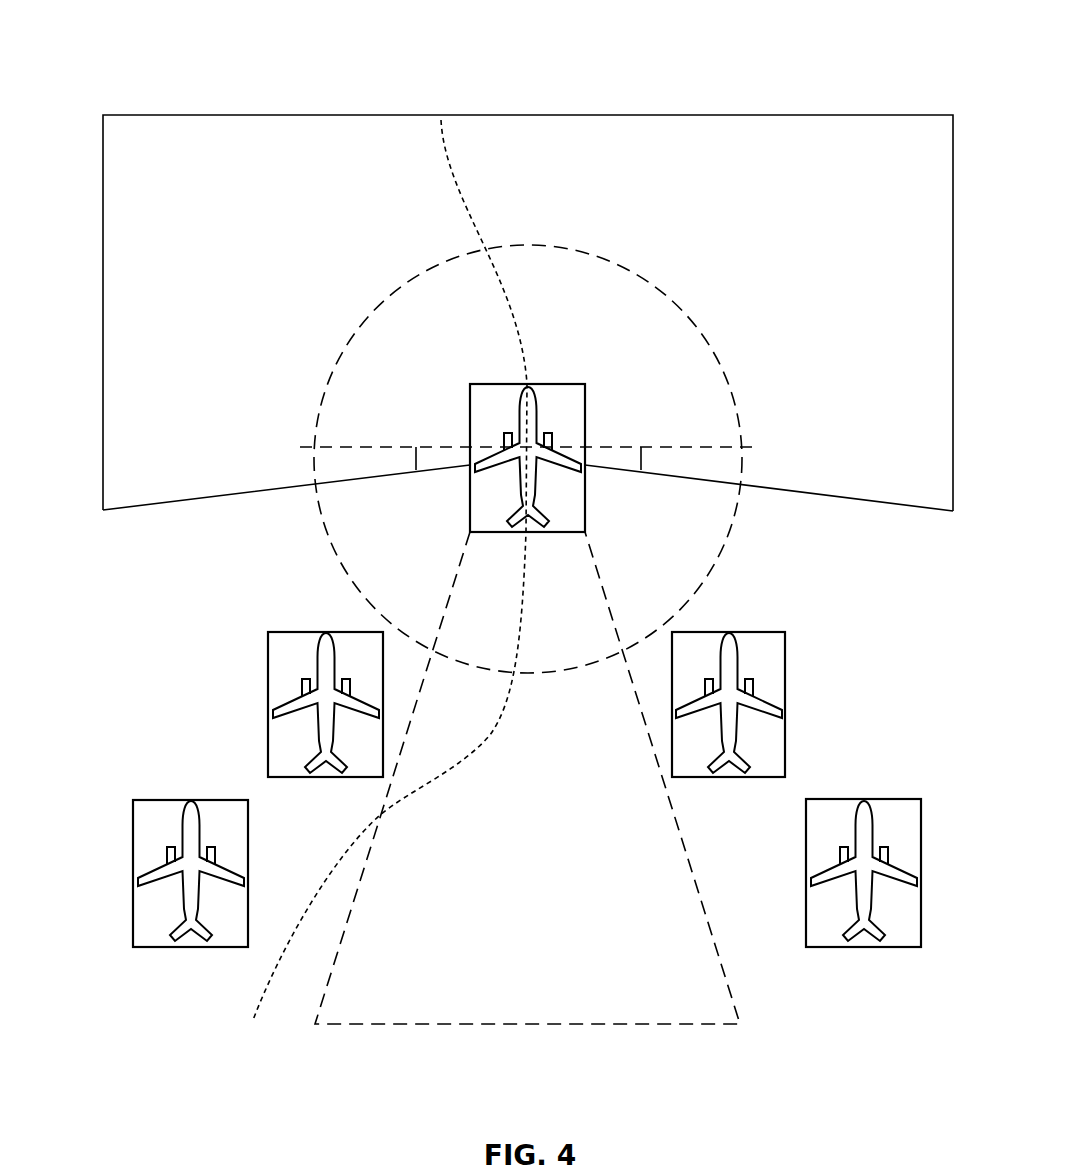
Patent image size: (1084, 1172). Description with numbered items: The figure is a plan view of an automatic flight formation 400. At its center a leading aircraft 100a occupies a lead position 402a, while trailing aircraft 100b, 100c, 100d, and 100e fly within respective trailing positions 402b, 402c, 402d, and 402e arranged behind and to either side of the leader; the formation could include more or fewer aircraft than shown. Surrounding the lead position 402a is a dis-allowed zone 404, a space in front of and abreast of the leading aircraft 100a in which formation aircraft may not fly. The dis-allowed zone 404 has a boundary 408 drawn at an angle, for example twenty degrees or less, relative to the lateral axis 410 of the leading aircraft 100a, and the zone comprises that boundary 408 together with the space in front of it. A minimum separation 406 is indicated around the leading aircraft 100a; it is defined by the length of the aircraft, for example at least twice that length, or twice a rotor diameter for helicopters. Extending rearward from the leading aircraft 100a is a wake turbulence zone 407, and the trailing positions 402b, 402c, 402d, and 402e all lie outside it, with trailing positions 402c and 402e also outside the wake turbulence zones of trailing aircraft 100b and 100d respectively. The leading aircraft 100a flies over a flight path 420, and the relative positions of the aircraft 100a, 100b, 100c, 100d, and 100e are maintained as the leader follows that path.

The automatic flight formation 400 is at (132, 38).
The lead position 402a is at (600, 287).
The trailing position 402b is at (278, 682).
The trailing position 402c is at (144, 850).
The trailing position 402d is at (772, 681).
The trailing position 402e is at (883, 827).
The leading aircraft 100a is at (540, 413).
The trailing aircraft 100b is at (317, 665).
The trailing aircraft 100c is at (182, 832).
The trailing aircraft 100d is at (737, 665).
The trailing aircraft 100e is at (872, 832).
The dis-allowed zone 404 is at (918, 183).
The minimum separation 406 is at (742, 458).
The wake turbulence zone 407 is at (443, 967).
The boundary 408 is at (232, 495).
The lateral axis 410 is at (360, 447).
The flight path 420 is at (425, 782).